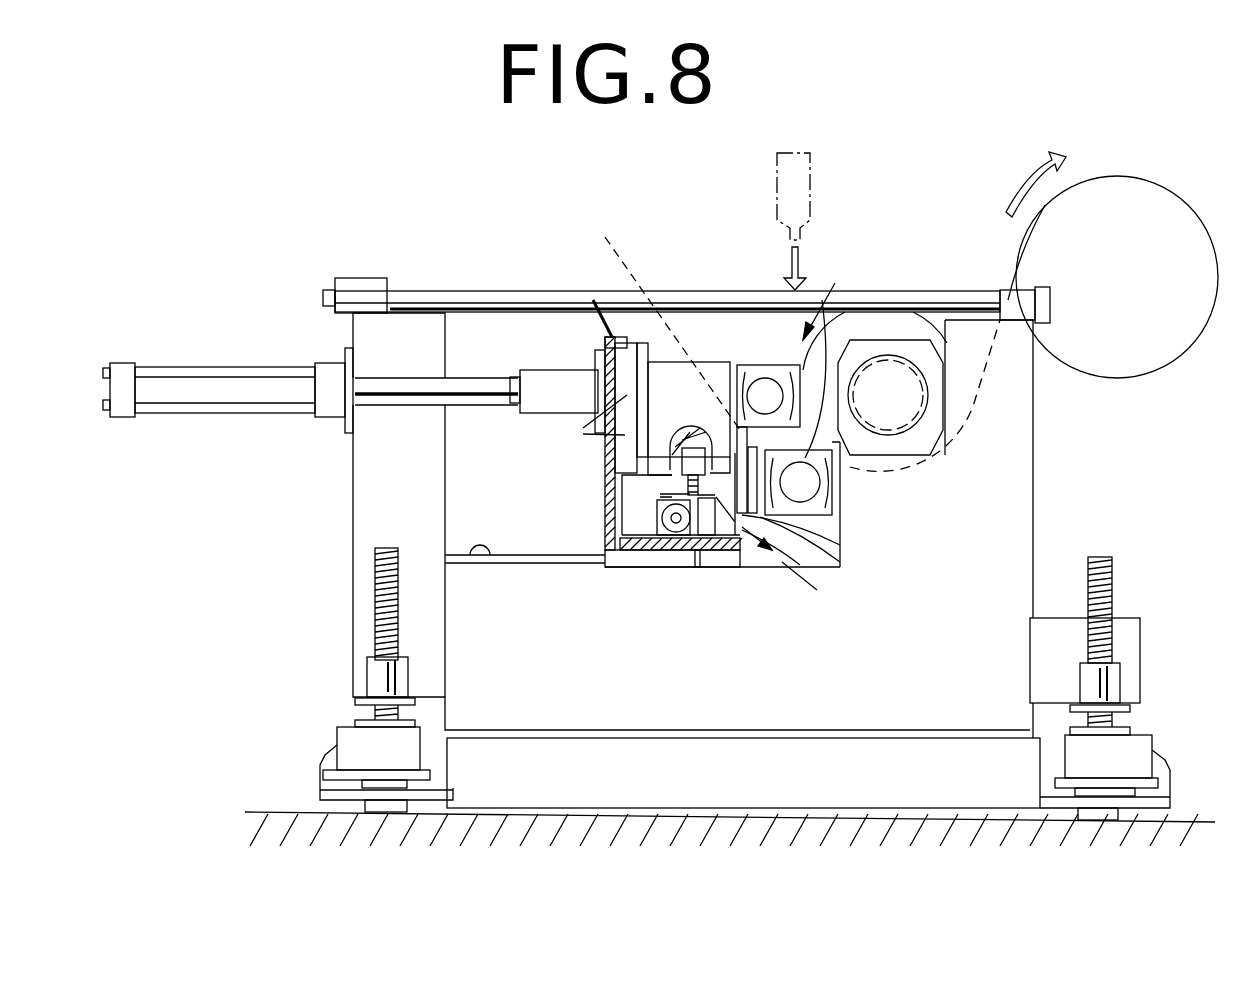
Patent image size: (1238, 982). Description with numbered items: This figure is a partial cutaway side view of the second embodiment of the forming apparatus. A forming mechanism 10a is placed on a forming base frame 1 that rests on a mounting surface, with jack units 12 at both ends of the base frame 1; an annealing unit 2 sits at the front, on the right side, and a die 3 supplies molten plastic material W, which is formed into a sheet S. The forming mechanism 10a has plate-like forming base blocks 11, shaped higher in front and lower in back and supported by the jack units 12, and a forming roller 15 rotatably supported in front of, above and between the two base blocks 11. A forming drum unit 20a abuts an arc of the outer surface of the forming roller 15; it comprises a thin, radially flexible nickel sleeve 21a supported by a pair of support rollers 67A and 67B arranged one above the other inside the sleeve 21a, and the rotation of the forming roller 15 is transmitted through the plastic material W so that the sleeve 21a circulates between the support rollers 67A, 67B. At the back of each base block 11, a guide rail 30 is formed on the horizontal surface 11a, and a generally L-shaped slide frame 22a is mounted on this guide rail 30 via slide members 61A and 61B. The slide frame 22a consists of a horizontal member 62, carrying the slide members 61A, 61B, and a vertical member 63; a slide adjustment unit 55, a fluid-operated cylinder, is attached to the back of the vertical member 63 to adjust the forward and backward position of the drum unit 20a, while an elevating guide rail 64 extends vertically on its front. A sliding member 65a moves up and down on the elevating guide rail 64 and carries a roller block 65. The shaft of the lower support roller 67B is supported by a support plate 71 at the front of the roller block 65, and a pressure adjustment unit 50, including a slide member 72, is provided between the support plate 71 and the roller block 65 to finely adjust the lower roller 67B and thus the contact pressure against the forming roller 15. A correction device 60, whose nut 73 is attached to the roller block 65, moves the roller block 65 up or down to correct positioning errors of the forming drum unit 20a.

The forming base frame 1 is at (1000, 770).
The annealing unit 2 is at (1118, 178).
The die 3 is at (810, 195).
The molten plastic material W is at (800, 265).
The sheet web S is at (1005, 290).
The forming mechanism 10a is at (834, 295).
The forming base block 11 is at (992, 505).
The horizontal surface 11a is at (488, 565).
The jack unit 12 is at (375, 672).
The forming roller 15 is at (888, 342).
The forming drum unit 20a is at (583, 203).
The sleeve 21a is at (659, 315).
The slide frame 22a is at (670, 393).
The guide rail 30 is at (532, 565).
The pressure adjustment unit 50 is at (840, 543).
The slide adjustment unit 55 is at (470, 400).
The correction device 60 is at (847, 628).
The slide member 61A is at (648, 563).
The slide member 61B is at (718, 567).
The horizontal member 62 is at (640, 548).
The vertical member 63 is at (610, 500).
The elevating guide rail 64 is at (618, 470).
The roller block 65 is at (600, 372).
The sliding member 65a is at (585, 418).
The support roller 67A is at (765, 396).
The support roller 67B is at (800, 480).
The support plate 71 is at (817, 522).
The slide member 72 is at (817, 543).
The nut 73 is at (672, 472).